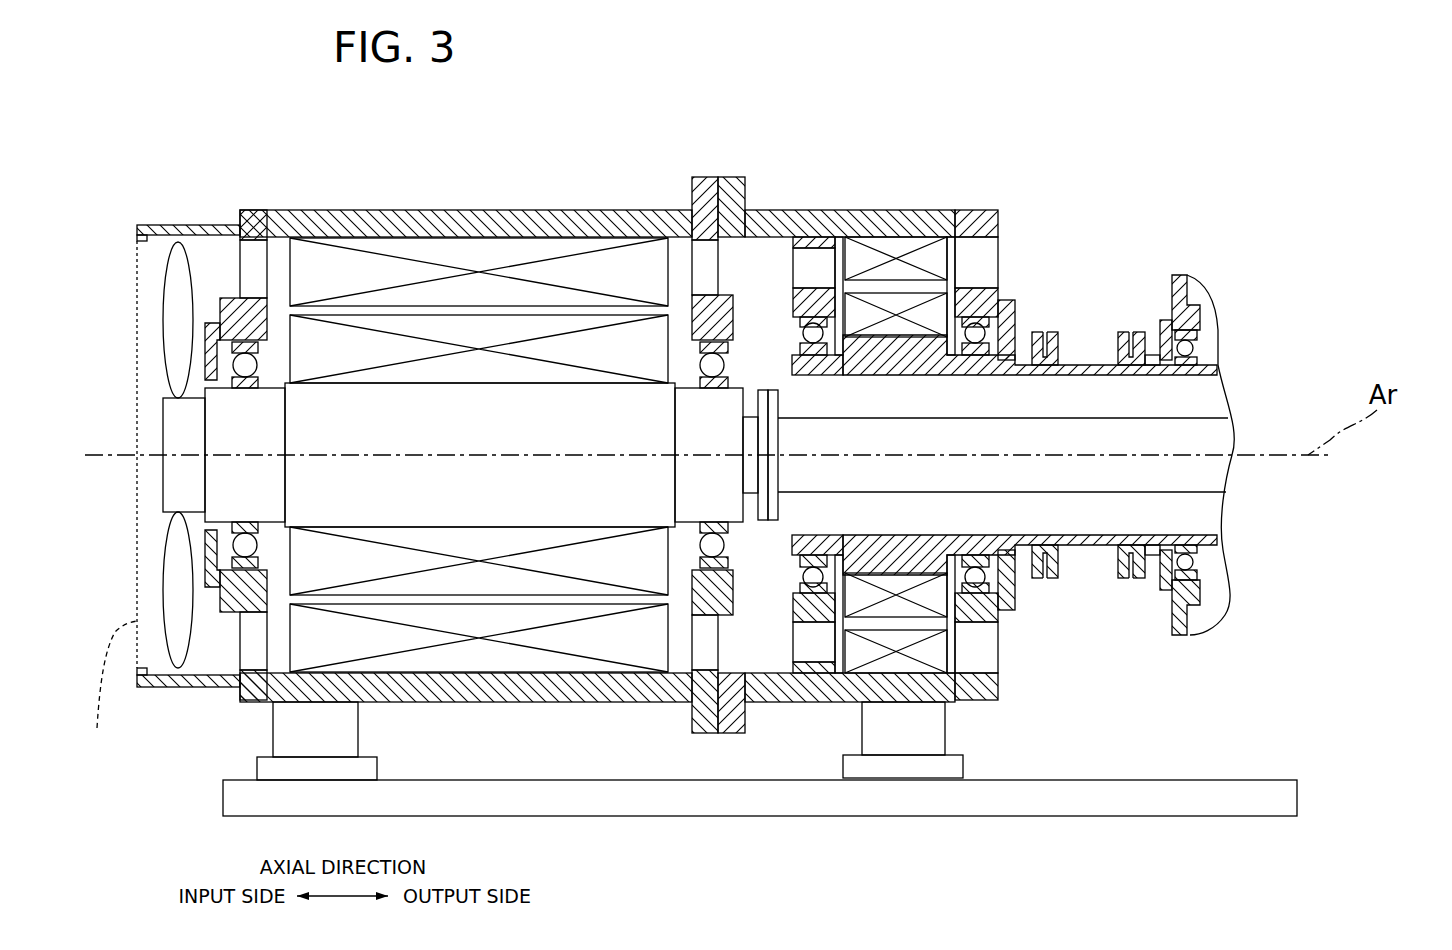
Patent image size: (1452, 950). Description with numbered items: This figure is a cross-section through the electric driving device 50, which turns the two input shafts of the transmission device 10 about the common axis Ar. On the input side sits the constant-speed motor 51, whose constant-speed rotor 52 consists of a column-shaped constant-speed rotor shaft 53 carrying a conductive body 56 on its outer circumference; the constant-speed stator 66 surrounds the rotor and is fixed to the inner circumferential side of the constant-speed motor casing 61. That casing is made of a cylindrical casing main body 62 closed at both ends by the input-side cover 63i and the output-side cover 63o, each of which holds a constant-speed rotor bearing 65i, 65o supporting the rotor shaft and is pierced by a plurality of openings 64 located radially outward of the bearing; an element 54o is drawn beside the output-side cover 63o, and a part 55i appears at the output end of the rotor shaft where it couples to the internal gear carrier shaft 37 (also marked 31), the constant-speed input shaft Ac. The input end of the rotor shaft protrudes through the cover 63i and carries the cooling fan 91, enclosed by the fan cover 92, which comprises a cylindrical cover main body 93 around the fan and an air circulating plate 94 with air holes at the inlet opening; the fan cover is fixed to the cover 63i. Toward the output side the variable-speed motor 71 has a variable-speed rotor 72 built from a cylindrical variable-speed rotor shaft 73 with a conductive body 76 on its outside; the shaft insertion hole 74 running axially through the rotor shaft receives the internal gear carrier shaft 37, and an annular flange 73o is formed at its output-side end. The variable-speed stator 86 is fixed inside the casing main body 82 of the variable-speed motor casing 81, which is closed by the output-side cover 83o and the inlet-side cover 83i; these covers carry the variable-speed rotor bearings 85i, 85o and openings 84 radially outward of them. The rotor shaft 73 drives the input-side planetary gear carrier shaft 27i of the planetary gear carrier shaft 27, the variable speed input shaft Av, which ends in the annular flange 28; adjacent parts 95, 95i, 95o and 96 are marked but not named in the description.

The transmission device 10 is at (762, 483).
The output bracket 27 is at (1312, 451).
The input-side planetary gear carrier shaft 27i is at (1218, 322).
The flange 28 is at (1190, 290).
The output shaft 31 is at (1115, 473).
The internal gear carrier shaft 37 is at (1207, 480).
The electric driving device 50 is at (253, 203).
The constant-speed motor 51 is at (268, 172).
The constant-speed rotor 52 is at (422, 615).
The constant-speed rotor shaft 53 is at (578, 505).
The outer bracket flange 54o is at (730, 205).
The inner coupling disc 55i is at (760, 388).
The conductive body 56 is at (493, 575).
The constant-speed motor casing 61 is at (510, 205).
The casing main body 62 is at (555, 224).
The input-side cover 63i is at (250, 258).
The output-side cover 63o is at (705, 178).
The openings 64 is at (240, 262).
The constant-speed rotor bearing 65i is at (253, 365).
The constant-speed rotor bearing 65o is at (705, 363).
The constant-speed stator 66 is at (450, 252).
The variable-speed motor 71 is at (992, 258).
The variable-speed rotor 72 is at (815, 880).
The variable-speed rotor shaft 73 is at (863, 558).
The annular flange 73o is at (1040, 330).
The shaft insertion hole 74 is at (825, 537).
The conductive body 76 is at (905, 610).
The variable-speed motor casing 81 is at (885, 205).
The casing main body 82 is at (910, 222).
The inlet-side cover 83i is at (805, 245).
The output-side cover 83o is at (985, 200).
The openings 84 is at (812, 335).
The variable-speed rotor bearing 85i is at (770, 388).
The variable-speed rotor bearing 85o is at (1005, 300).
The variable-speed stator 86 is at (933, 258).
The cooling fan 91 is at (172, 242).
The fan cover 92 is at (188, 770).
The cover main body 93 is at (168, 688).
The air circulating plate 94 is at (106, 695).
The seal unit 95 is at (1137, 98).
The inner seal 95i is at (1098, 363).
The outer seal 95o is at (1190, 325).
The seal ring 96 is at (1162, 325).